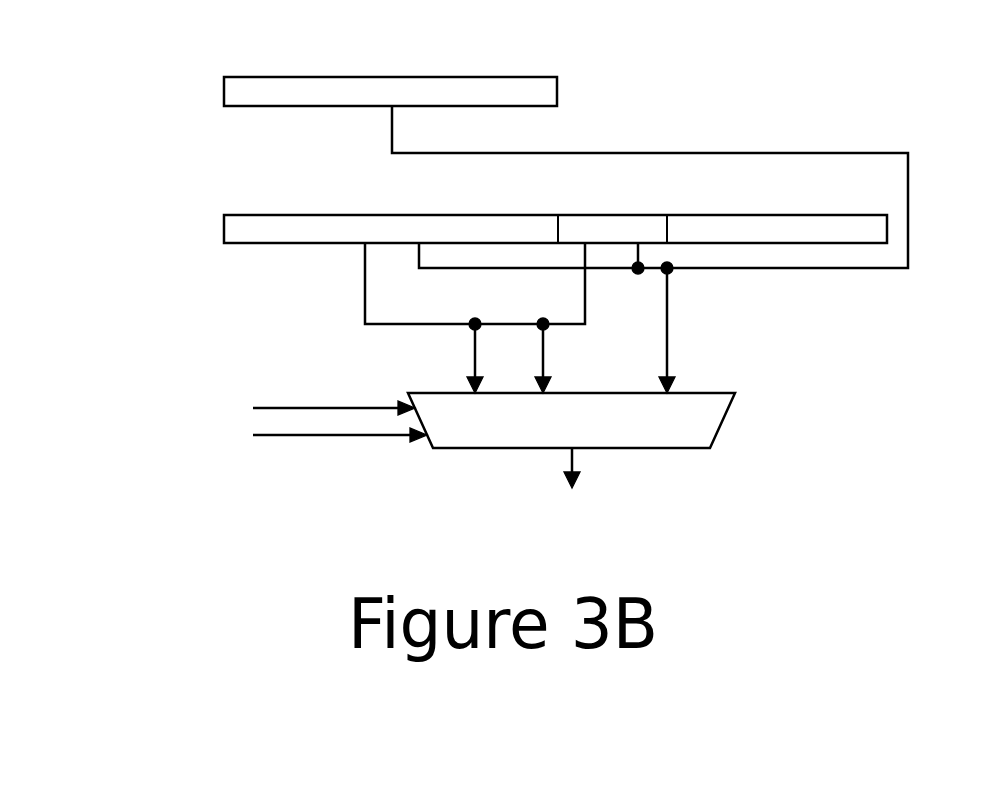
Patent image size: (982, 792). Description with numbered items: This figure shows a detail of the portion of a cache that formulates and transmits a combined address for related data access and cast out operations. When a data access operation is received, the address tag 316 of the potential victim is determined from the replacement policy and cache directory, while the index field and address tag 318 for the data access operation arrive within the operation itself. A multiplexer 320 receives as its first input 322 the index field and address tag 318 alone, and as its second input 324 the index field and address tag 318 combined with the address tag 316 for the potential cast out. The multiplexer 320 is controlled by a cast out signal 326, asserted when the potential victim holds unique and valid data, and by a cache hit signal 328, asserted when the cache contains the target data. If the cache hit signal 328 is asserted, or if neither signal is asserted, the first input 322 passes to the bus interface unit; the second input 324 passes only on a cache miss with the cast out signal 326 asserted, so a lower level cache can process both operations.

The address tag 316 is at (366, 76).
The address tag 318 is at (530, 213).
The multiplexer 320 is at (716, 392).
The first input 322 is at (448, 326).
The second input 324 is at (733, 270).
The cast out signal 326 is at (302, 407).
The cache hit signal 328 is at (302, 437).